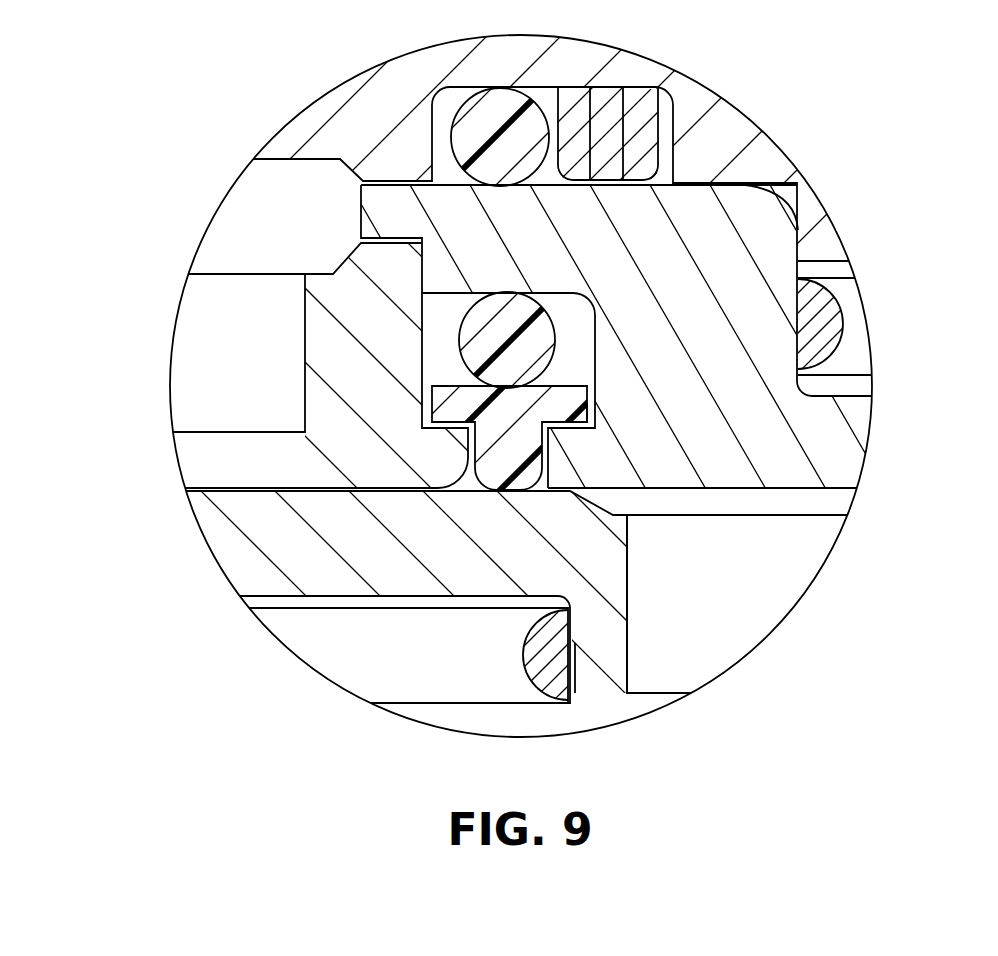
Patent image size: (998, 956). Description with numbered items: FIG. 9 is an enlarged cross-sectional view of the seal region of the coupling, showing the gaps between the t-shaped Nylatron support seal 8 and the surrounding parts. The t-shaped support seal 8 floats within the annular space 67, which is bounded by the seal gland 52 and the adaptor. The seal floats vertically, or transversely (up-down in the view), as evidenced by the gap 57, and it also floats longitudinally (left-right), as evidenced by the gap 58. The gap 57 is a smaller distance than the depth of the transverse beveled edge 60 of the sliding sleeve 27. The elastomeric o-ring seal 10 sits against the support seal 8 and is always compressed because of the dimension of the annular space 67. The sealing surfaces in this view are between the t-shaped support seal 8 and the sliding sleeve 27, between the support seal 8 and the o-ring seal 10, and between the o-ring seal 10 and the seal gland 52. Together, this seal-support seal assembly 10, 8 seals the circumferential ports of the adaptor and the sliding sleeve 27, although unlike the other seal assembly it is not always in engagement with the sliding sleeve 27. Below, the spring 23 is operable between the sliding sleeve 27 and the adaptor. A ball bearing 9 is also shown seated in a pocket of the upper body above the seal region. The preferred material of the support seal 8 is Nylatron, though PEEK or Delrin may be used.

The ball bearing 9 is at (510, 153).
The elastomeric seal 10 is at (490, 332).
The t-shaped support seal 8 is at (498, 423).
The annular space 67 is at (575, 328).
The seal gland 52 is at (730, 320).
The gap 58 is at (592, 403).
The gap 57 is at (567, 425).
The sliding sleeve 27 is at (398, 542).
The transverse beveled edge 60 is at (610, 506).
The spring 23 is at (537, 663).